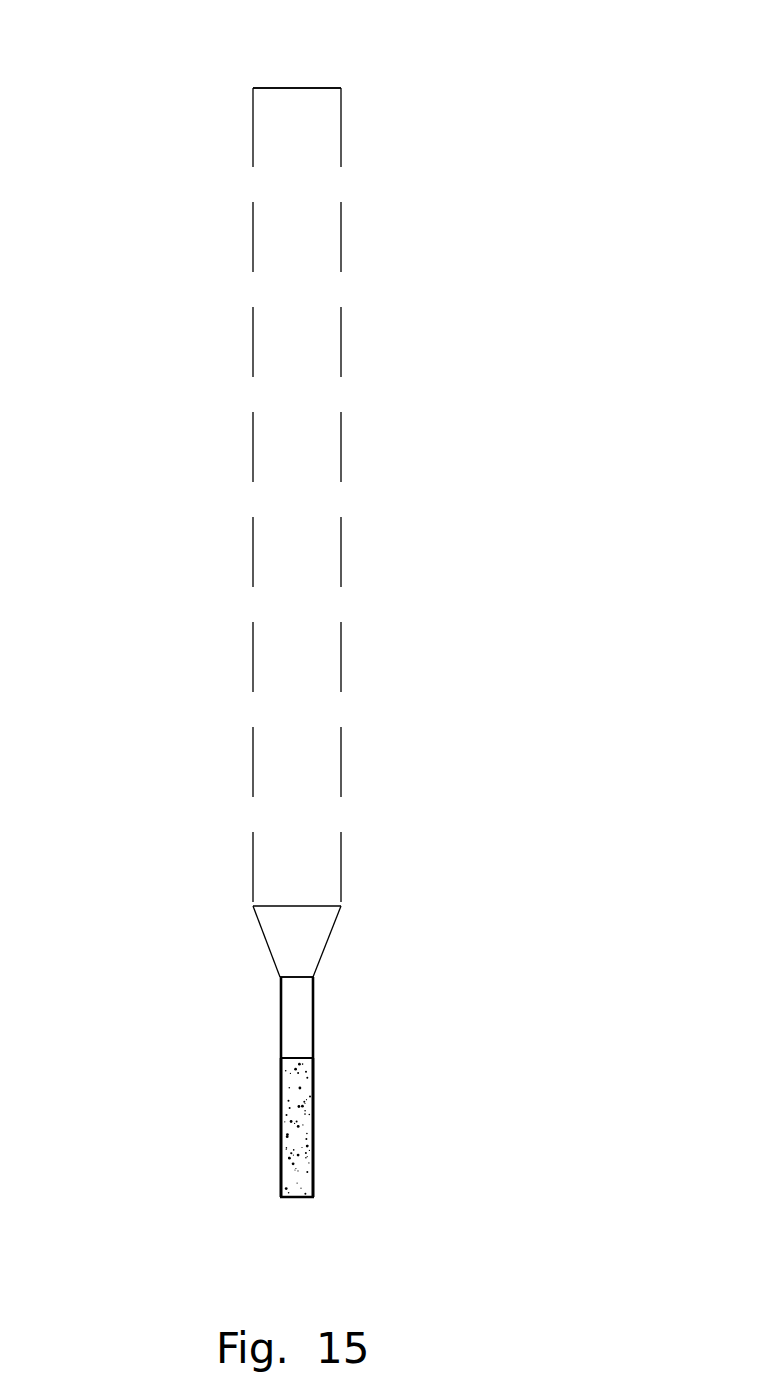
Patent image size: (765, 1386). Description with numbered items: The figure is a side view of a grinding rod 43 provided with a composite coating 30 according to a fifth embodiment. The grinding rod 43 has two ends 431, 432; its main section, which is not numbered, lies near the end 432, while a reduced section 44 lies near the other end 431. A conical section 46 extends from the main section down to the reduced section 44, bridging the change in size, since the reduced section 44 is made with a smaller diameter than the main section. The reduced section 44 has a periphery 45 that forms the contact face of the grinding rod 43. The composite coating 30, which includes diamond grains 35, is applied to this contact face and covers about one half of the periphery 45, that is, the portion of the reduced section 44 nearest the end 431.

The grinding rod 43 is at (316, 363).
The end 432 is at (297, 88).
The end 431 is at (298, 1198).
The conical section 46 is at (285, 919).
The periphery 45 is at (305, 1015).
The reduced section 44 is at (234, 1033).
The diamond grains 35 is at (283, 1147).
The composite coating 30 is at (360, 1135).